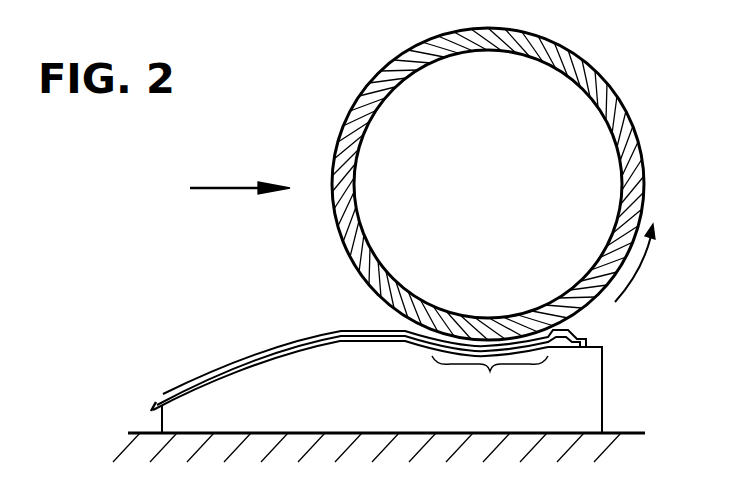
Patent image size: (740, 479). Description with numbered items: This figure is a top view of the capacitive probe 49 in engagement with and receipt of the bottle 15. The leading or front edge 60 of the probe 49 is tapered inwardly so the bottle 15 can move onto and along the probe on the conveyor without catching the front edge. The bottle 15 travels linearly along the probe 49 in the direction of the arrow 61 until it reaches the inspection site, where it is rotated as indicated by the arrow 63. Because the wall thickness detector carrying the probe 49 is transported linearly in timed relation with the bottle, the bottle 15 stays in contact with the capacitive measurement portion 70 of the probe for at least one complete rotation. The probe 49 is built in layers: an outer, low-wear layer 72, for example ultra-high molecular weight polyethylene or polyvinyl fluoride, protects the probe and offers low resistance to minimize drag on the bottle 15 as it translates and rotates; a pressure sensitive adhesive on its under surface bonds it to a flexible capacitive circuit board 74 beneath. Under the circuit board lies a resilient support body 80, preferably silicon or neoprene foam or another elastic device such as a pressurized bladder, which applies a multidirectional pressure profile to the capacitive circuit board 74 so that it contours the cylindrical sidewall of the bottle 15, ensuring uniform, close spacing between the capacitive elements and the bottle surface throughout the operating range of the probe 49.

The bottle 15 is at (596, 88).
The arrow 61 is at (232, 186).
The arrow 63 is at (637, 270).
The capacitive probe 49 is at (617, 390).
The resilient support body 80 is at (342, 412).
The leading or front edge 60 is at (175, 362).
The outer, low-wear layer 72 is at (238, 352).
The flexible capacitive circuit board 74 is at (152, 397).
The capacitive measurement portion 70 is at (490, 380).